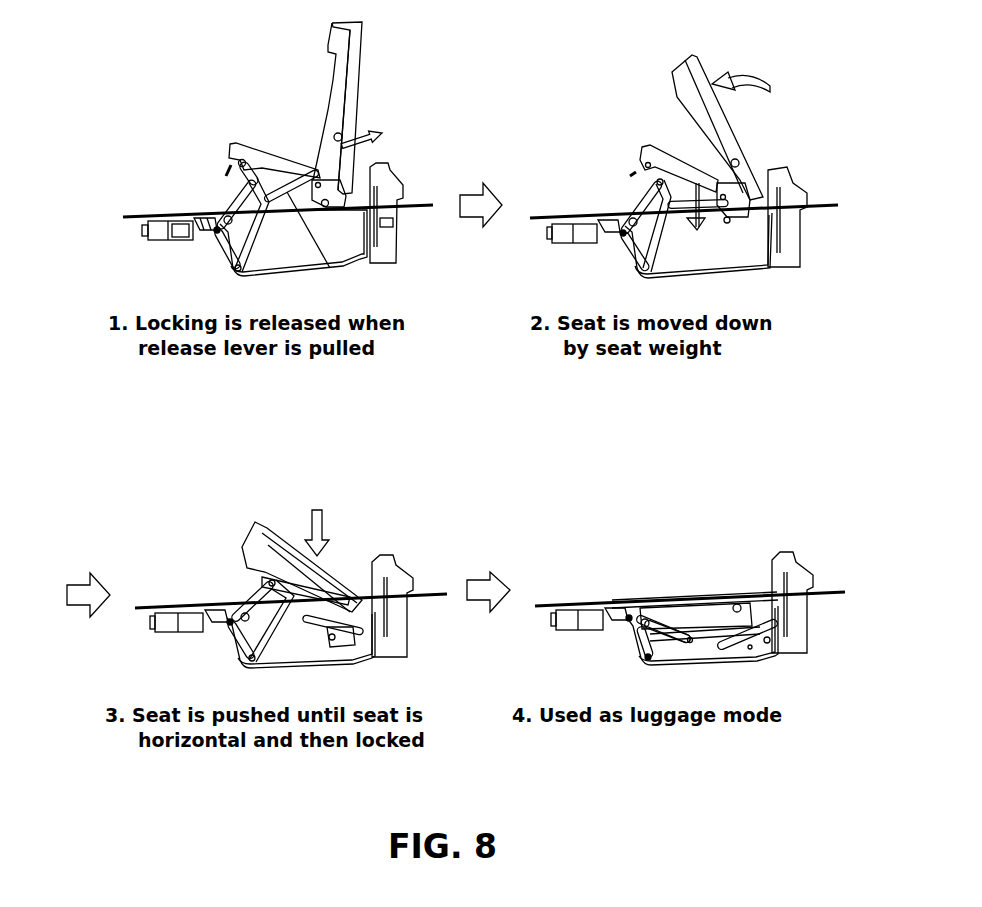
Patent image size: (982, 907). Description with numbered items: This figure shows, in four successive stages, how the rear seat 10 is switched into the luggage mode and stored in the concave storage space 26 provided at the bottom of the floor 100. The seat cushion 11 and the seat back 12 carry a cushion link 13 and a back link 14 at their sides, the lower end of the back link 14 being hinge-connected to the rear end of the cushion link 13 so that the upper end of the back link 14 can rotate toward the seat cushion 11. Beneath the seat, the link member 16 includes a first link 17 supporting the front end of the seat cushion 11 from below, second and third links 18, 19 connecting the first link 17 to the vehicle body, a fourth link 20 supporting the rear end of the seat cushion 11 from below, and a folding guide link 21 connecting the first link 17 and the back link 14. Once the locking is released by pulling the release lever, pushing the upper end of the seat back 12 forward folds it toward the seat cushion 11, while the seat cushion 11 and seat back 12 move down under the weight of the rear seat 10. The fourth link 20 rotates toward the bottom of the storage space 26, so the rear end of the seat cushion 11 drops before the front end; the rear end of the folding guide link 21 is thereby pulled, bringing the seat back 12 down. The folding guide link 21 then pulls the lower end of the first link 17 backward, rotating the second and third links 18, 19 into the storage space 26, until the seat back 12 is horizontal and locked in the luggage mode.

The rear seat 10 is at (225, 49).
The floor 100 is at (135, 213).
The seat back 12 is at (340, 72).
The back link 14 is at (350, 93).
The seat cushion 11 is at (257, 160).
The cushion link 13 is at (278, 167).
The first link 17 is at (233, 167).
The second link 18 is at (233, 202).
The third link 19 is at (248, 238).
The link member 16 is at (273, 240).
The fourth link 20 is at (345, 200).
The folding guide link 21 is at (330, 268).
The storage space 26 is at (373, 250).